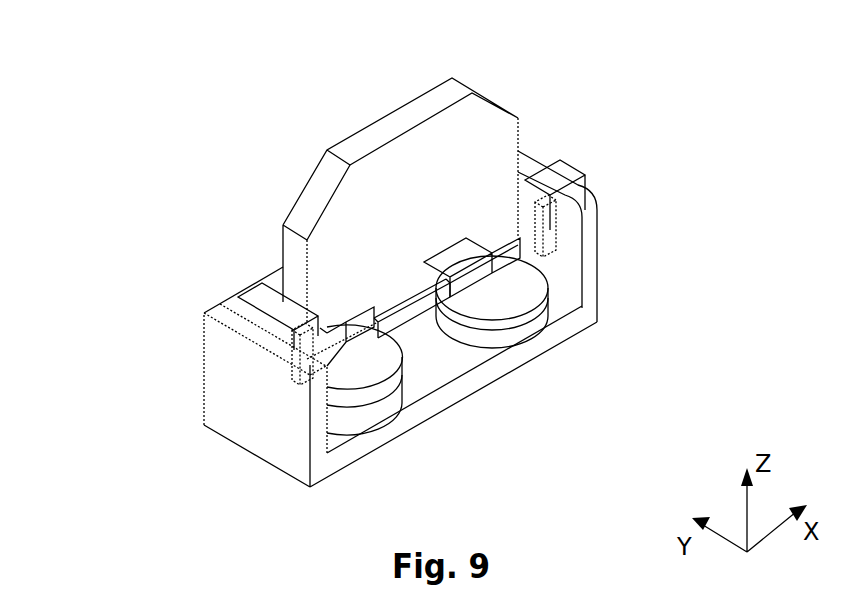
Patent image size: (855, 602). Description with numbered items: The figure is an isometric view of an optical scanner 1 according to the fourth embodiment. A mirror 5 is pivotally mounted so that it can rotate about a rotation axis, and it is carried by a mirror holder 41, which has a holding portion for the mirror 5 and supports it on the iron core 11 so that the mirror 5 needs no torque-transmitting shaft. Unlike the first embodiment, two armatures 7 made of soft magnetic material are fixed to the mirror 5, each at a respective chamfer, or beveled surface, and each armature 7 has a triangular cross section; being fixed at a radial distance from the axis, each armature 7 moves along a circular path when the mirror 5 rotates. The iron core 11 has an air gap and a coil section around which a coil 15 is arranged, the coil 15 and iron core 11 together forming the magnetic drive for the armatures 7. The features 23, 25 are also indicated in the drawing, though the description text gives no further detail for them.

The optical scanner device 1 is at (226, 84).
The mirror 5 is at (488, 143).
The armature 7 is at (512, 235).
The iron core 11 is at (596, 293).
The coil 15 is at (387, 405).
The contact slot 23 is at (390, 294).
The contact spring 25 is at (558, 223).
The mirror holder 41 is at (428, 302).